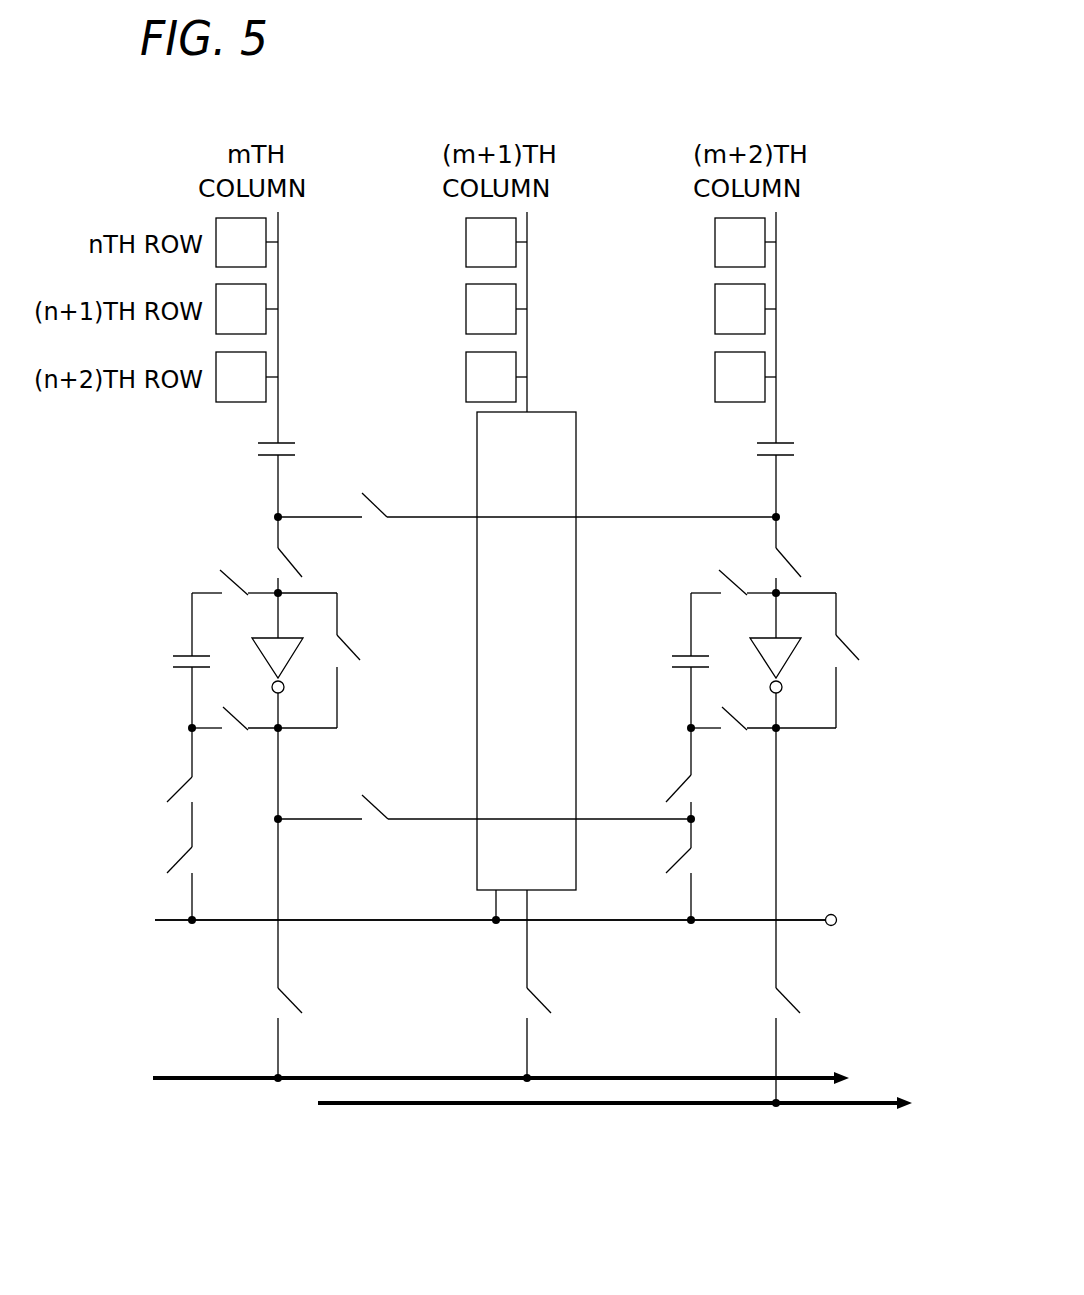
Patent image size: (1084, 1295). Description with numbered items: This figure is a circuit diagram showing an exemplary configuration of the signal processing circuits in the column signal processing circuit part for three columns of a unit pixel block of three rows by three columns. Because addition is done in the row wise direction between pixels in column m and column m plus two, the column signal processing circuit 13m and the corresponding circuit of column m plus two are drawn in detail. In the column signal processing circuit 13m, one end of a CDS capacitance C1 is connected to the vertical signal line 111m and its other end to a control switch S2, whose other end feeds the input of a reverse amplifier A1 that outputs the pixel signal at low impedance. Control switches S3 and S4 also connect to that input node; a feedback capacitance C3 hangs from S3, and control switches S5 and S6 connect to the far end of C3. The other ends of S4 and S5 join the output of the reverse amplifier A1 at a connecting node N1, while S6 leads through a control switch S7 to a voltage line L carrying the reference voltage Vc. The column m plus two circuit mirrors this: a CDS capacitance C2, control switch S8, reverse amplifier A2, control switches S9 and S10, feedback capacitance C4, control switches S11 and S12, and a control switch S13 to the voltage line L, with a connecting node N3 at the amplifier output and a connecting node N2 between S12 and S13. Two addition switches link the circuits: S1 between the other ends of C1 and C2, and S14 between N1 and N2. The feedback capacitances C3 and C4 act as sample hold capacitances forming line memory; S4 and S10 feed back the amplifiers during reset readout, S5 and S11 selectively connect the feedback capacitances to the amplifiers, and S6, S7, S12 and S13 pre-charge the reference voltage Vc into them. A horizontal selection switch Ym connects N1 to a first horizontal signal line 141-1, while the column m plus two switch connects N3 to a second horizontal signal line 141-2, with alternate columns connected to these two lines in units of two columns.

The vertical signal line 111m is at (280, 283).
The column signal processing circuit 13m is at (456, 654).
The CDS capacitance C1 is at (259, 476).
The CDS capacitance C2 is at (758, 476).
The feedback capacitance C3 is at (173, 660).
The feedback capacitance C4 is at (673, 660).
The addition switch S1 is at (527, 522).
The control switch S2 is at (272, 555).
The control switch S3 is at (235, 599).
The control switch S4 is at (319, 660).
The control switch S5 is at (264, 735).
The control switch S6 is at (198, 787).
The control switch S7 is at (198, 883).
The control switch S8 is at (771, 555).
The control switch S9 is at (733, 599).
The control switch S10 is at (817, 660).
The control switch S11 is at (763, 735).
The control switch S12 is at (704, 773).
The control switch S13 is at (704, 869).
The addition switch S14 is at (482, 825).
The reverse amplifier A1 is at (262, 667).
The reverse amplifier A2 is at (761, 667).
The connecting node N1 is at (282, 731).
The connecting node N2 is at (695, 819).
The connecting node N3 is at (780, 731).
The reference voltage Vc is at (514, 921).
The voltage line L is at (381, 921).
The horizontal selection switch Ym is at (302, 1001).
The first horizontal signal line 141-1 is at (652, 1076).
The second horizontal signal line 141-2 is at (652, 1106).